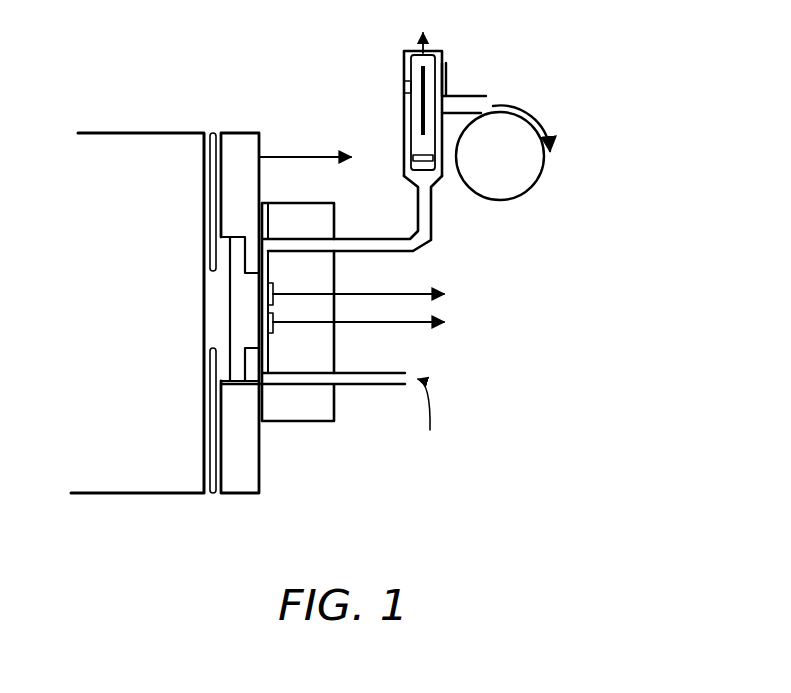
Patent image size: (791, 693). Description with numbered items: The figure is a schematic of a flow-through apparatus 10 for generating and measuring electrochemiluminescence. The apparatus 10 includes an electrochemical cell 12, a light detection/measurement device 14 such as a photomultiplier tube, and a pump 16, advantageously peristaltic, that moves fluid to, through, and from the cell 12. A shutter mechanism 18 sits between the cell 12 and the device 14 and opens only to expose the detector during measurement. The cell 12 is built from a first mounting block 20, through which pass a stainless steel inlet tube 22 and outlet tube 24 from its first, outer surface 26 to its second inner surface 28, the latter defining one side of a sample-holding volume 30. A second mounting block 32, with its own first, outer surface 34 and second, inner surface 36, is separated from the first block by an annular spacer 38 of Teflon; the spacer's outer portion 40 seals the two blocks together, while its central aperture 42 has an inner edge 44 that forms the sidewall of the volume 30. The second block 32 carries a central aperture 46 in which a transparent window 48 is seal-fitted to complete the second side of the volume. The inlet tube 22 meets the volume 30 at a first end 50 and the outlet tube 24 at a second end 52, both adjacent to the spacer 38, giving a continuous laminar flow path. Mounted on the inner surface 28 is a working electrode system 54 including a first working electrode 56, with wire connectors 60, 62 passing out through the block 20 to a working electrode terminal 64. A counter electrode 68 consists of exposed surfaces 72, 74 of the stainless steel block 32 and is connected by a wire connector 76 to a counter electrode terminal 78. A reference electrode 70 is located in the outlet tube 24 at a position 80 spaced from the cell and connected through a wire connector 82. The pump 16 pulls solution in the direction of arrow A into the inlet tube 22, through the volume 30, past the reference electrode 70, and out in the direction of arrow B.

The apparatus 10 is at (228, 67).
The electrochemical cell 12 is at (348, 489).
The light detection/measurement device 14 is at (128, 491).
The pump 16 is at (512, 194).
The shutter mechanism 18 is at (210, 128).
The first mounting block 20 is at (302, 420).
The inlet tube 22 is at (400, 388).
The outlet tube 24 is at (406, 232).
The first, outer surface 26 is at (333, 352).
The second inner surface 28 is at (270, 325).
The sample-holding volume 30 is at (263, 320).
The second mounting block 32 is at (240, 492).
The first, outer surface 34 is at (218, 400).
The second, inner surface 36 is at (210, 492).
The annular spacer 38 is at (258, 420).
The outer portion 40 is at (270, 215).
The central aperture 42 is at (206, 243).
The inner edge 44 is at (263, 236).
The central aperture 46 is at (202, 330).
The window 48 is at (227, 295).
The first end 50 is at (250, 380).
The second end 52 is at (254, 234).
The working electrode system 54 is at (360, 282).
The first working electrode 56 is at (270, 292).
The wire connector 60 is at (407, 283).
The wire connector 62 is at (405, 322).
The working electrode terminal 64 is at (499, 306).
The counter electrode 68 is at (257, 148).
The reference electrode 70 is at (443, 68).
The exposed surface 72 is at (257, 253).
The exposed surface 74 is at (250, 352).
The wire connector 76 is at (315, 148).
The counter electrode terminal 78 is at (369, 158).
The position 80 is at (400, 105).
The wire connector 82 is at (426, 36).
The arrow A is at (425, 422).
The arrow B is at (528, 145).